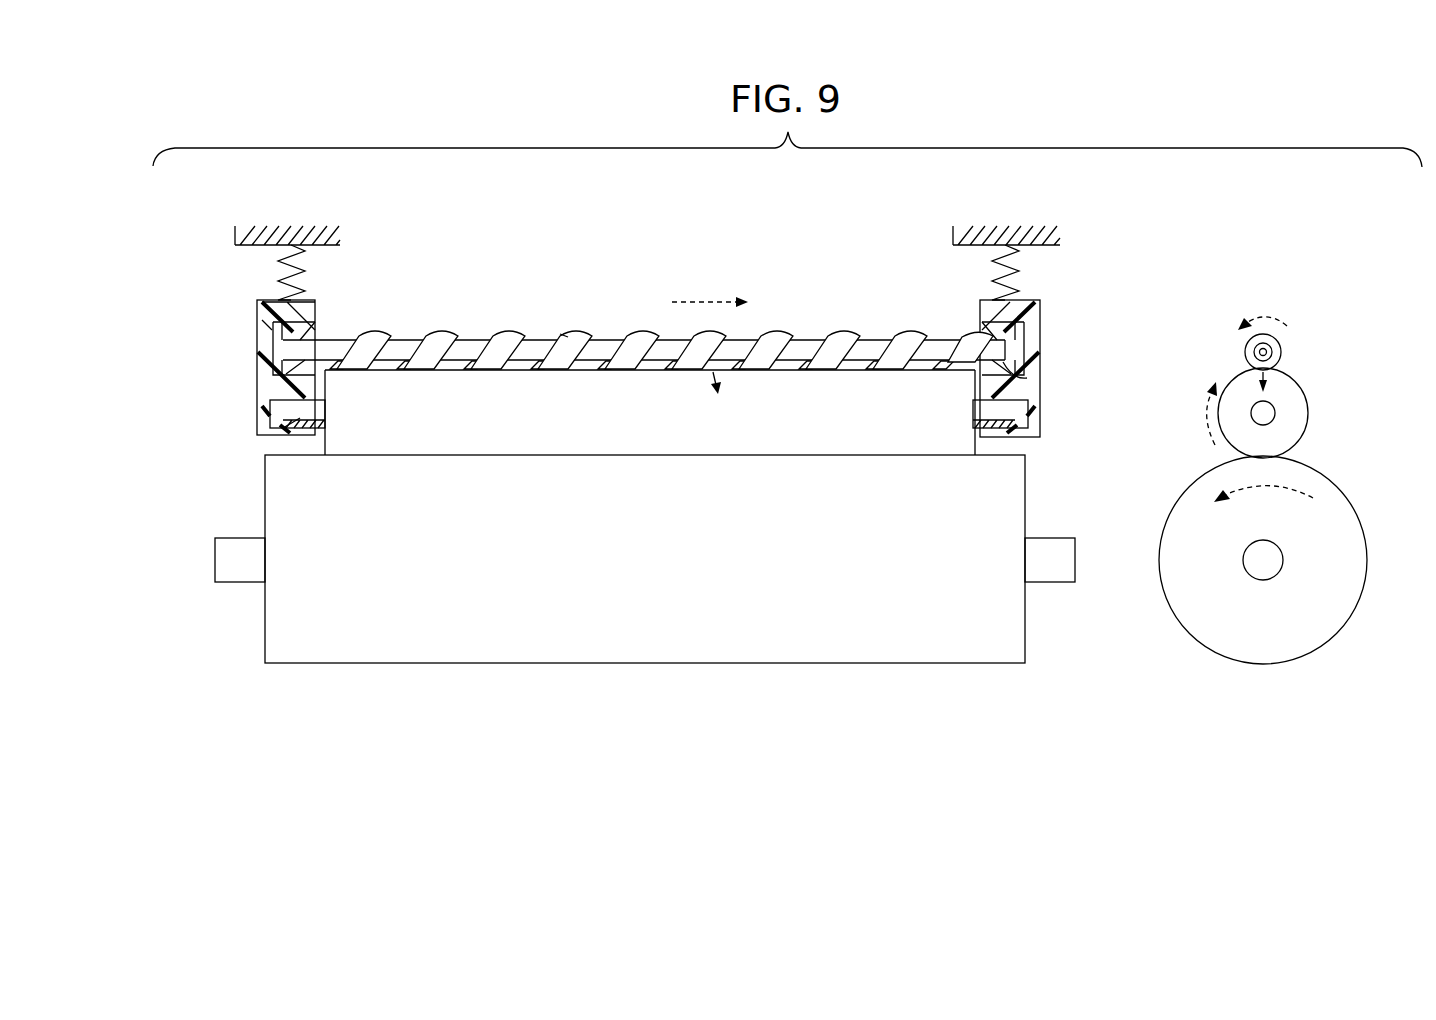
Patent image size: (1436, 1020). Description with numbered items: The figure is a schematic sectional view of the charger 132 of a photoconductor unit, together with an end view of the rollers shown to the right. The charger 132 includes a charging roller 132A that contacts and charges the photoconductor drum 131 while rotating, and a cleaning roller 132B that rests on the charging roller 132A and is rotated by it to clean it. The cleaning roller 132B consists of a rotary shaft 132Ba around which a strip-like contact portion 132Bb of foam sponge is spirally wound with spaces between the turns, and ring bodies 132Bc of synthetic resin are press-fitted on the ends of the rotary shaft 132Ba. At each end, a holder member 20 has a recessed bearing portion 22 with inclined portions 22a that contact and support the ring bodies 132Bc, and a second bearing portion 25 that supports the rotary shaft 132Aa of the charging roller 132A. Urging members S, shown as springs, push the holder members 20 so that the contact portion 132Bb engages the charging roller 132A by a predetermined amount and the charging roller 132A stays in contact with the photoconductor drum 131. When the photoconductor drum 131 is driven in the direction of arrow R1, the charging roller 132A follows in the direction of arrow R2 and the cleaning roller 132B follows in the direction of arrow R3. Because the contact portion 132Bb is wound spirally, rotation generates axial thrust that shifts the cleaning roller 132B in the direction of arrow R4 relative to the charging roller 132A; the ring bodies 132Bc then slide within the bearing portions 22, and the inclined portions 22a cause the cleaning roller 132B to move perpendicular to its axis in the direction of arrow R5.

The charger 132 is at (737, 234).
The holder member 20 is at (258, 282).
The urging member S is at (300, 276).
The bearing portion 22 is at (258, 356).
The inclined portion 22a is at (293, 334).
The second bearing portion 25 is at (268, 412).
The ring body 132Bc is at (284, 332).
The charging roller 132A is at (1308, 384).
The rotary shaft of the charging roller 132Aa is at (305, 430).
The cleaning roller 132B is at (620, 318).
The rotary shaft 132Ba is at (536, 334).
The contact portion 132Bb is at (562, 334).
The photoconductor drum 131 is at (1360, 460).
The rotation direction of the photoconductor drum R1 is at (1255, 510).
The rotation direction of the charging roller R2 is at (1192, 413).
The rotation direction of the cleaning roller R3 is at (1262, 307).
The axial thrust direction R4 is at (710, 289).
The perpendicular movement direction R5 is at (1253, 352).